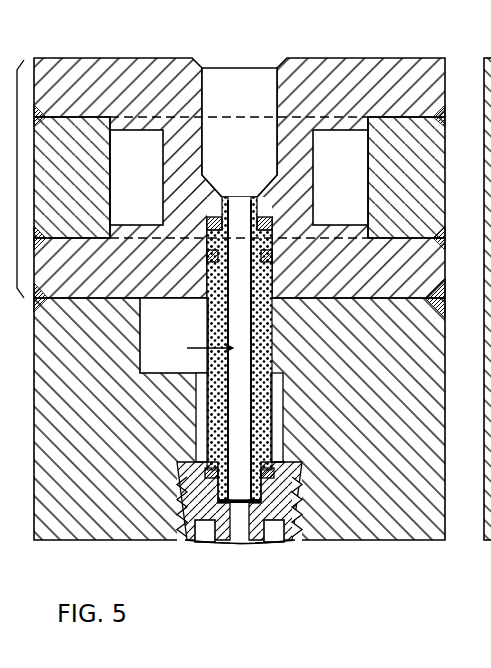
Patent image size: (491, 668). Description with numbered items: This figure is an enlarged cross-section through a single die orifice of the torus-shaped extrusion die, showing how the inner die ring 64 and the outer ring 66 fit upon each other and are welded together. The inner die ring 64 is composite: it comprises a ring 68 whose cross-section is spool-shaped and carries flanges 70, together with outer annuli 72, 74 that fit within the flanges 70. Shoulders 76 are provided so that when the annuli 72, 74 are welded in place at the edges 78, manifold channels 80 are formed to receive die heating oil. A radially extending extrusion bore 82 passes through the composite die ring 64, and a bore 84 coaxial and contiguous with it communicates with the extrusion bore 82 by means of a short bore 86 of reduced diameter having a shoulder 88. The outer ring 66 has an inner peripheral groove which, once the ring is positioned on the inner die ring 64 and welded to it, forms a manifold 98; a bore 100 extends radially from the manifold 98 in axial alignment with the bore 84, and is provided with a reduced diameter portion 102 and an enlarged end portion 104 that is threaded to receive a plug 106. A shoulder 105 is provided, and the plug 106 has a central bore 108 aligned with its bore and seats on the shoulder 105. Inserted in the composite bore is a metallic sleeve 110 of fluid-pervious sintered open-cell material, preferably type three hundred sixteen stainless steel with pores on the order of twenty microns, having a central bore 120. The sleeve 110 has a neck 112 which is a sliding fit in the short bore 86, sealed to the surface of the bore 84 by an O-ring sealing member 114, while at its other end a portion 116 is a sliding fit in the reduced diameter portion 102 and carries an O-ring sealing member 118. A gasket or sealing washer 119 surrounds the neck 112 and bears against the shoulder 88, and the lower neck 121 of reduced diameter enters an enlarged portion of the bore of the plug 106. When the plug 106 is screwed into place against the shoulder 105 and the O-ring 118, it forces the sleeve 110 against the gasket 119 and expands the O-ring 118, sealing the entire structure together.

The inner die ring 64 is at (18, 179).
The outer ring 66 is at (33, 393).
The ring 68 is at (73, 58).
The flanges 70 is at (407, 72).
The outer annulus 72 is at (85, 177).
The outer annulus 74 is at (424, 174).
The shoulders 76 is at (112, 128).
The welded edges 78 is at (38, 110).
The manifold channels 80 is at (152, 163).
The extrusion bore 82 is at (277, 96).
The bore 84 is at (212, 258).
The short bore 86 is at (222, 213).
The shoulder 88 is at (272, 220).
The manifold 98 is at (189, 331).
The bore 100 is at (273, 392).
The reduced diameter portion 102 is at (205, 463).
The enlarged end portion 104 is at (307, 485).
The shoulder 105 is at (187, 473).
The plug 106 is at (285, 498).
The central bore 108 is at (230, 530).
The metallic sleeve 110 is at (258, 317).
The neck 112 is at (241, 213).
The O-ring sealing member 114 is at (268, 258).
The portion 116 is at (280, 458).
The O-ring sealing member 118 is at (283, 468).
The gasket or sealing washer 119 is at (273, 225).
The central bore 120 is at (200, 371).
The neck 121 is at (213, 493).